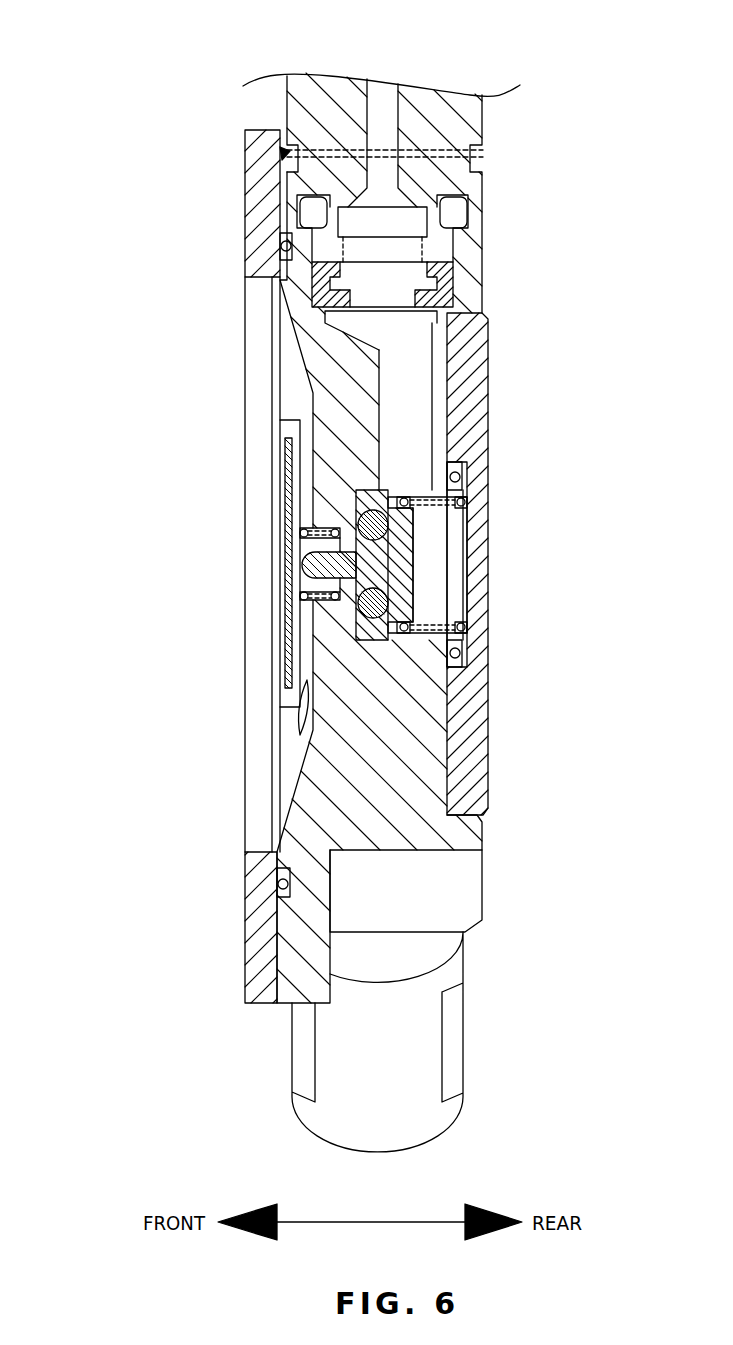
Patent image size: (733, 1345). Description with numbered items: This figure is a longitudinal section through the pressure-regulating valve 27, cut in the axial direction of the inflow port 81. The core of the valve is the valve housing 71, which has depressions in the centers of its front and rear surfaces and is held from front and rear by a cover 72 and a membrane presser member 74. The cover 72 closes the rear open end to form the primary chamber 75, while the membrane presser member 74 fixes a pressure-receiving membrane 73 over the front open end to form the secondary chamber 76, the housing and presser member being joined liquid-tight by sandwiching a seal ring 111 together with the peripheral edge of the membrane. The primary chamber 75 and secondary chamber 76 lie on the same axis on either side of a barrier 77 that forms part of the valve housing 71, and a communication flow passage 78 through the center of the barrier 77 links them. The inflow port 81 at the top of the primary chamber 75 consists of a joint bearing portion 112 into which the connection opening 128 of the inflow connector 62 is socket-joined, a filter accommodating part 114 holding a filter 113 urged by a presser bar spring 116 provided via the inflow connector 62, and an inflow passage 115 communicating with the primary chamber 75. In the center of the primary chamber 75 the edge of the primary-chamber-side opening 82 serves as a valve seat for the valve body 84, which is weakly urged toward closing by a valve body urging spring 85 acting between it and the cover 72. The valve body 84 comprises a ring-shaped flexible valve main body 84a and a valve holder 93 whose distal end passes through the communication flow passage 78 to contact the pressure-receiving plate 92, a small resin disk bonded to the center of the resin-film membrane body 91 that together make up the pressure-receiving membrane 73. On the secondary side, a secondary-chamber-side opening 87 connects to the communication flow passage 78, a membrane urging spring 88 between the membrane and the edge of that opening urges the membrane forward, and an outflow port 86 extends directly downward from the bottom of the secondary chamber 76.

The spindle unit 27 is at (66, 64).
The inflow connector 62 is at (507, 112).
The connection opening 128 is at (289, 172).
The membrane presser member 74 is at (245, 143).
The seal ring 111 is at (283, 240).
The joint bearing portion 112 is at (465, 178).
The presser bar spring 116 is at (468, 225).
The filter 113 is at (461, 290).
The inflow port 81 is at (587, 289).
The filter accommodating part 114 is at (423, 328).
The inflow passage 115 is at (423, 408).
The primary-chamber-side opening 82 is at (364, 500).
The valve body urging spring 85 is at (452, 503).
The valve body 84 is at (531, 564).
The valve main body 84a is at (388, 522).
The valve holder 93 is at (360, 563).
The primary chamber 75 is at (440, 597).
The cover 72 is at (488, 770).
The secondary chamber 76 is at (288, 783).
The valve housing 71 is at (482, 840).
The outflow port 86 is at (463, 963).
The pressure-receiving membrane 73 is at (206, 564).
The membrane body 91 is at (275, 400).
The pressure-receiving plate 92 is at (288, 432).
The communication flow passage 78 is at (302, 532).
The secondary-chamber-side opening 87 is at (318, 578).
The membrane urging spring 88 is at (303, 598).
The barrier 77 is at (329, 676).